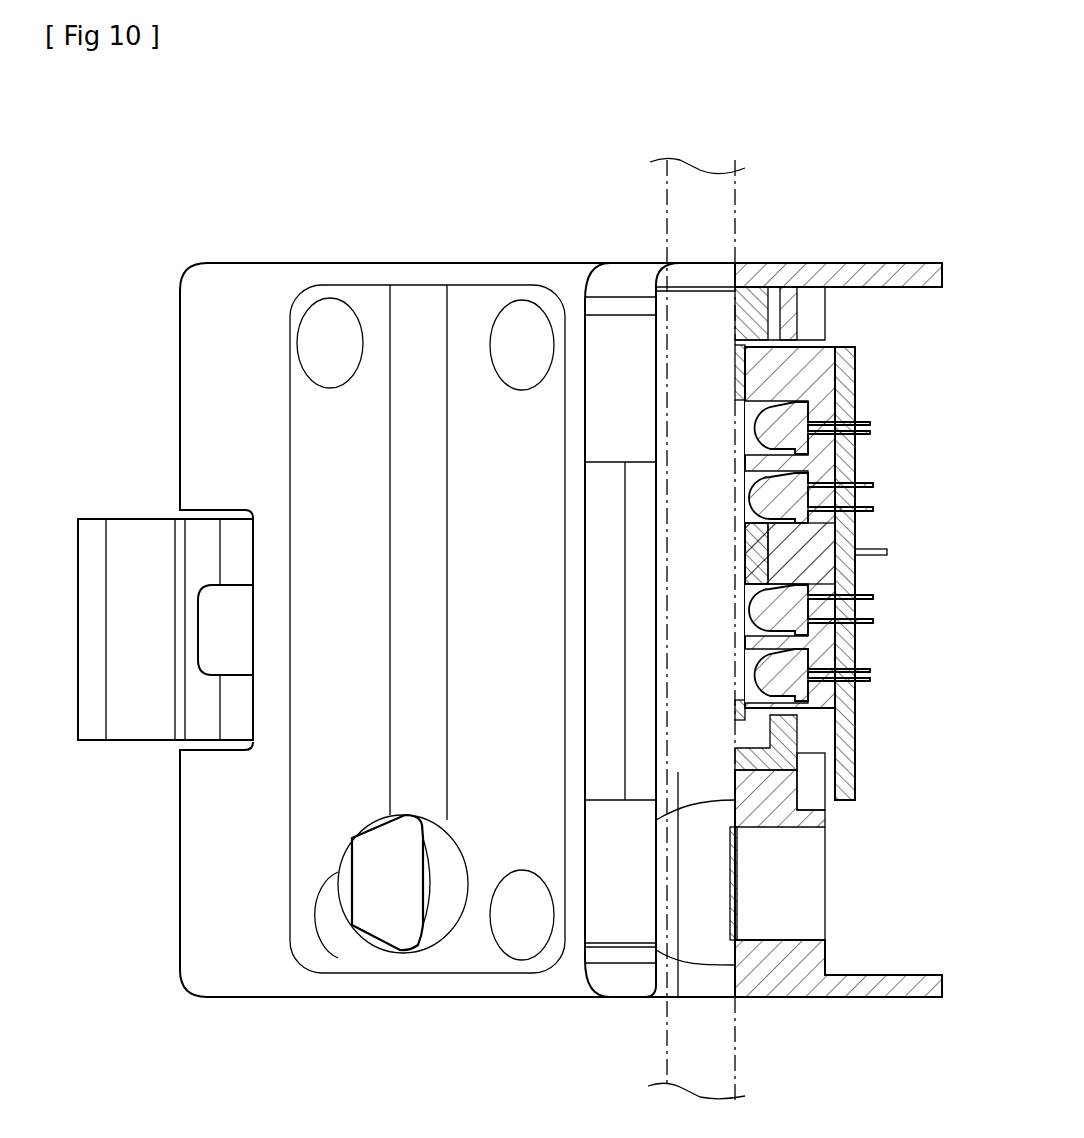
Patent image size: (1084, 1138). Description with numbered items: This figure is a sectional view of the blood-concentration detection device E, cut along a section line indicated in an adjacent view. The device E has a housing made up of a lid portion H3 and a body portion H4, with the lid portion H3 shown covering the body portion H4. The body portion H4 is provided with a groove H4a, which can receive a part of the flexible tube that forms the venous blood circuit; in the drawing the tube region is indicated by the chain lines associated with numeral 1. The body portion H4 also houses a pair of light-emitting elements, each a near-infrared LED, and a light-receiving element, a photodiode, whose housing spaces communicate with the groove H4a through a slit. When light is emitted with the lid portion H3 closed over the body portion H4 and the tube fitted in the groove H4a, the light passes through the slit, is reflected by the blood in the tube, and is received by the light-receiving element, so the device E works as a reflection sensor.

The blood-concentration detection device E is at (236, 228).
The lid portion H3 is at (192, 383).
The body portion H4 is at (863, 270).
The groove H4a is at (725, 990).
The panel 1 is at (667, 1058).